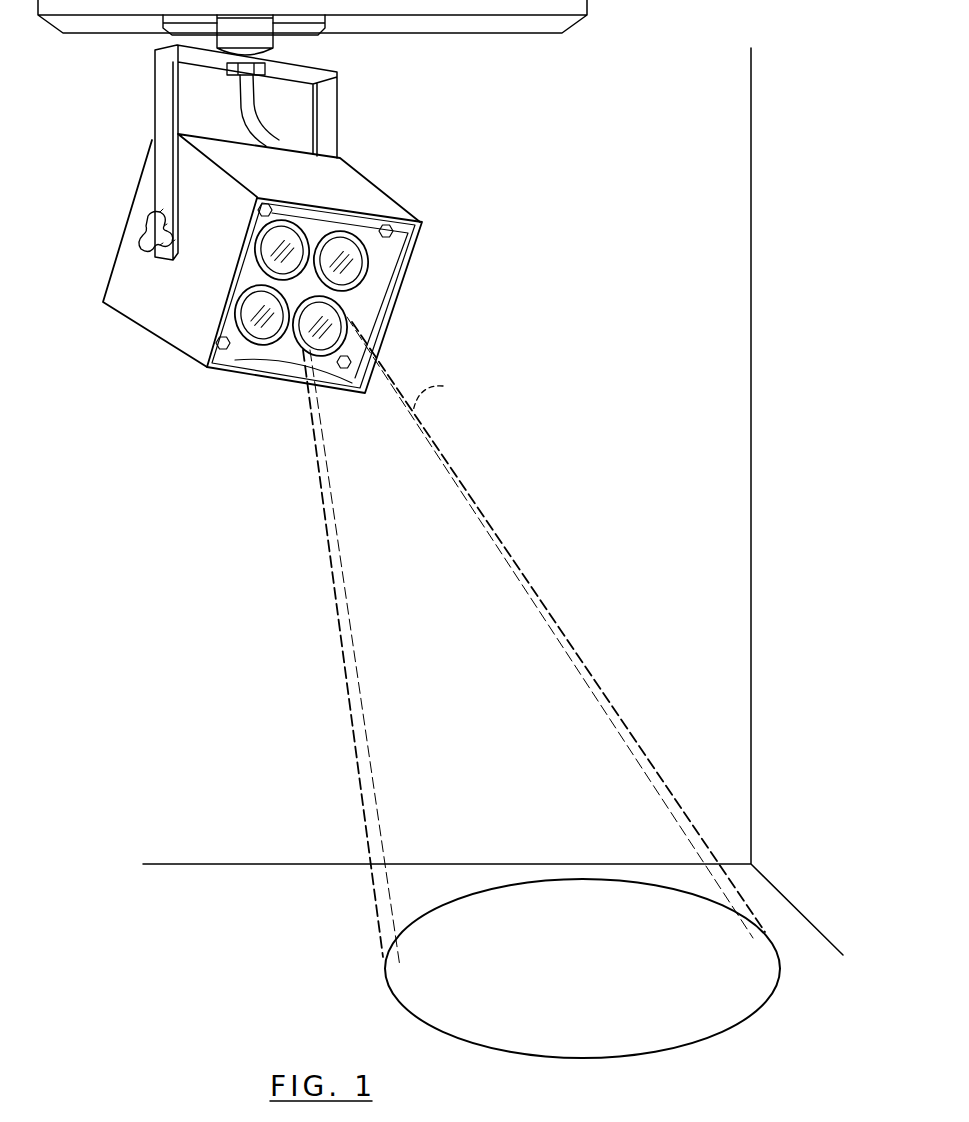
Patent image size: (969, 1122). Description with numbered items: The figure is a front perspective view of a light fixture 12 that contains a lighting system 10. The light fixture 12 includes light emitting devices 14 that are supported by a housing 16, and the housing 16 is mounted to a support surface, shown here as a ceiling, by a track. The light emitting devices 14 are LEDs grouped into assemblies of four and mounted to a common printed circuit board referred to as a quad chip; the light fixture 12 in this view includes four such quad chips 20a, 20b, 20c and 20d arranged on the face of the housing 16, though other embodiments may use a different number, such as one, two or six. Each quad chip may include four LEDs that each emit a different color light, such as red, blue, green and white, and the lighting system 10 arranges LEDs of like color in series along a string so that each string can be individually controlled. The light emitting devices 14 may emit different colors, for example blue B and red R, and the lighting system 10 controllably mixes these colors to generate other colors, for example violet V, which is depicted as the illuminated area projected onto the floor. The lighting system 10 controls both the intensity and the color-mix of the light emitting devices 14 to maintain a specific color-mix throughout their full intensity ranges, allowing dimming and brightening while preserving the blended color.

The lighting system 10 is at (588, 96).
The light fixture 12 is at (103, 304).
The light emitting devices 14 is at (367, 233).
The housing 16 is at (349, 167).
The quad chip 20a is at (369, 262).
The quad chip 20b is at (343, 309).
The quad chip 20c is at (233, 325).
The quad chip 20d is at (258, 238).
The red light R is at (438, 395).
The blue light B is at (447, 461).
The violet light V is at (774, 947).